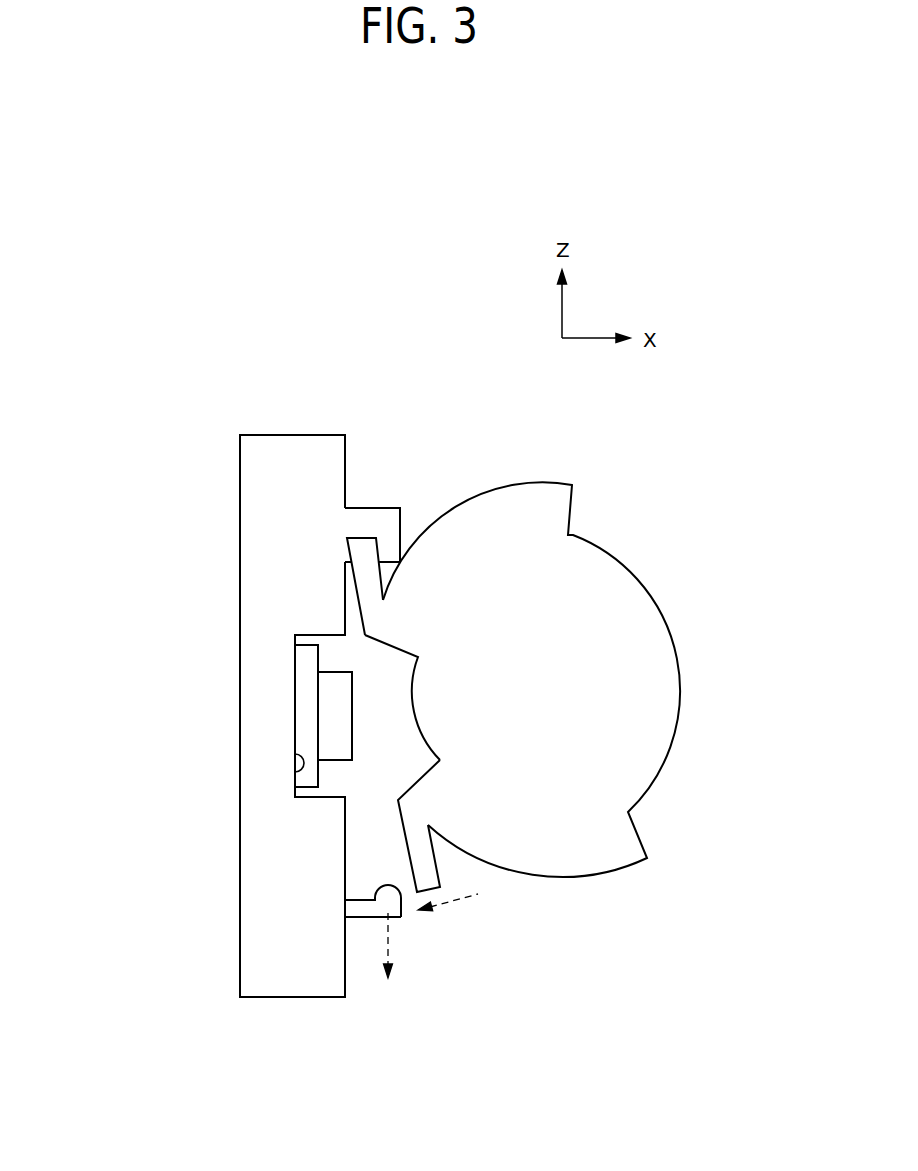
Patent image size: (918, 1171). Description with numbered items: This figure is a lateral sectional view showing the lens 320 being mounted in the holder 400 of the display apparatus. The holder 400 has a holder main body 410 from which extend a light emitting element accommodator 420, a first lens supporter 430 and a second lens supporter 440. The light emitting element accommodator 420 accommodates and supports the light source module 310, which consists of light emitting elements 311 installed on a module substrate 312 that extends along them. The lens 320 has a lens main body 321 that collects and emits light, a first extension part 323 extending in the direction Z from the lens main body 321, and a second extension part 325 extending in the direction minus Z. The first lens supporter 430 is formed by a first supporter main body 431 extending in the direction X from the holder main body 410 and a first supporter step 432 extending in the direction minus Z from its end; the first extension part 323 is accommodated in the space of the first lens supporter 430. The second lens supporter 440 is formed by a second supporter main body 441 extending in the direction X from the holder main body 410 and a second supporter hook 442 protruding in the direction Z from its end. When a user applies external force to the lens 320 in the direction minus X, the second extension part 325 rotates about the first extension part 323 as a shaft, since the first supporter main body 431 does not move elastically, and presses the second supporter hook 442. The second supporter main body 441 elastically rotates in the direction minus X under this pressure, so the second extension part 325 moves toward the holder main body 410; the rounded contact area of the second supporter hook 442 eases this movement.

The holder 400 is at (260, 417).
The holder main body 410 is at (252, 452).
The light emitting element accommodator 420 is at (293, 775).
The first lens supporter 430 is at (132, 512).
The first supporter main body 431 is at (357, 525).
The first supporter step 432 is at (387, 547).
The second lens supporter 440 is at (132, 865).
The second supporter main body 441 is at (340, 919).
The second supporter hook 442 is at (356, 897).
The light source module 310 is at (132, 658).
The light emitting elements 311 is at (338, 722).
The module substrate 312 is at (300, 653).
The lens 320 is at (670, 590).
The lens main body 321 is at (675, 682).
The first extension part 323 is at (368, 537).
The second extension part 325 is at (435, 890).